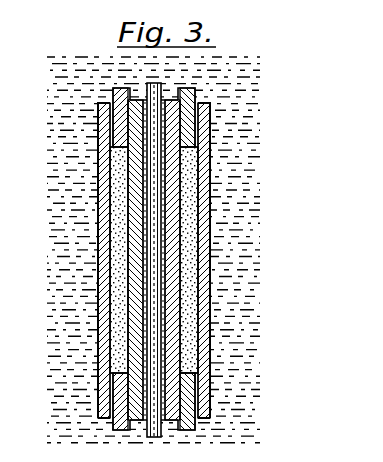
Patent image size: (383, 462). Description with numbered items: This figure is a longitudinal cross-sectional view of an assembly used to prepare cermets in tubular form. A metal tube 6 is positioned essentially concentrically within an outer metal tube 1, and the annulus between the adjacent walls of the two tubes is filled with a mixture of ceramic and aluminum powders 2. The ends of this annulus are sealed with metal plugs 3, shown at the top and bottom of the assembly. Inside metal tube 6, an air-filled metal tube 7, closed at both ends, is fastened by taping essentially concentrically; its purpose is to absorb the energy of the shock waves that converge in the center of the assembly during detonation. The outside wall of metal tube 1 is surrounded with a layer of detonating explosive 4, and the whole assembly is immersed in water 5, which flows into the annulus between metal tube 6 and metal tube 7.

The metal tube 1 is at (196, 172).
The mixture of ceramic and aluminum powders 2 is at (185, 222).
The metal plugs 3 is at (186, 108).
The layer of detonating explosive 4 is at (200, 270).
The water 5 is at (75, 292).
The metal tube 6 is at (168, 327).
The air-filled metal tube 7 is at (159, 361).